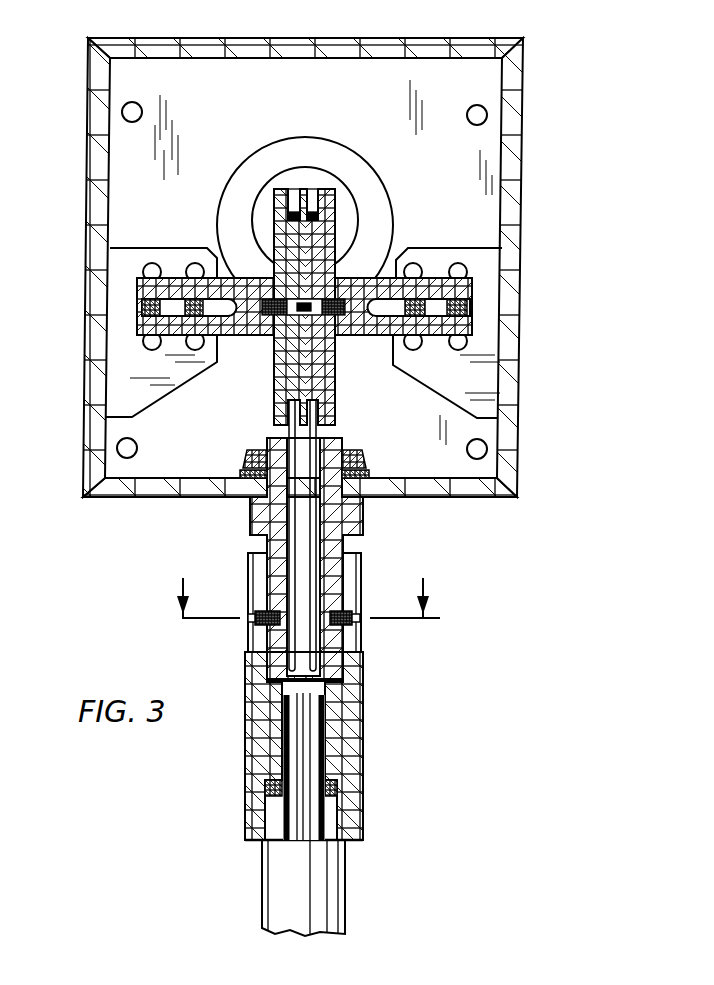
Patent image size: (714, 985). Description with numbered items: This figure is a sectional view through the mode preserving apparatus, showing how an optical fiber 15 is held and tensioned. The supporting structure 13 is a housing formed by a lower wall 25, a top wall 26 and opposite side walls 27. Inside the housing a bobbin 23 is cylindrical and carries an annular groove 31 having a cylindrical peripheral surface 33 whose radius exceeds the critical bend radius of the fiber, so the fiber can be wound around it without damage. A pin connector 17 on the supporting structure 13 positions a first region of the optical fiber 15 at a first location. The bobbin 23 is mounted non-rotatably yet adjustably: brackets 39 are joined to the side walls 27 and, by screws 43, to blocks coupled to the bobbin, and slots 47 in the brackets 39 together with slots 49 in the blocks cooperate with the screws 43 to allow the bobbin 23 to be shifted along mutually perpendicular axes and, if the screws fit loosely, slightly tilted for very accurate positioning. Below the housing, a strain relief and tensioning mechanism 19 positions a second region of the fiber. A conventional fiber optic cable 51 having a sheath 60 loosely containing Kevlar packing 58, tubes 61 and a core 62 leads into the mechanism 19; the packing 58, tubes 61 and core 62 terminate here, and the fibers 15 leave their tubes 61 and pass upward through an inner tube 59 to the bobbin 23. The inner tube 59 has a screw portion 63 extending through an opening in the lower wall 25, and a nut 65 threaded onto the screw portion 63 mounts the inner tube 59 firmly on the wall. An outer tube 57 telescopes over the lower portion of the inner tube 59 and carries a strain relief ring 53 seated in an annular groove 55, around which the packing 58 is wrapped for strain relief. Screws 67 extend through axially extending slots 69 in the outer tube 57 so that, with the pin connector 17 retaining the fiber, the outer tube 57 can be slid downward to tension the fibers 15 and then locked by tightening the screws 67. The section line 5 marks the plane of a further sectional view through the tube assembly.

The supporting structure 13 is at (326, 271).
The top wall 26 is at (445, 48).
The lower wall 25 is at (120, 488).
The side walls 27 is at (100, 132).
The pin connector 17 is at (311, 165).
The annular grooves 31 is at (294, 190).
The peripheral surface 33 is at (291, 222).
The bobbin 23 is at (274, 379).
The brackets 39 is at (117, 300).
The slots 47 is at (145, 268).
The slots 49 is at (188, 265).
The screws 43 is at (142, 307).
The optical fiber 15 is at (288, 436).
The nut 65 is at (244, 452).
The screw portion 63 is at (344, 443).
The inner tube 59 is at (363, 511).
The slots 69 is at (253, 556).
The screws 67 is at (250, 615).
The strain relief and tensioning mechanism 19 is at (301, 643).
The strain relief ring 53 is at (338, 785).
The annular groove 55 is at (276, 790).
The outer tube 57 is at (353, 827).
The packing 58 is at (323, 716).
The tubes 61 is at (313, 740).
The core 62 is at (303, 762).
The fiber optic cable 51 is at (272, 890).
The sheath 60 is at (345, 926).
The section line 5- 5 is at (308, 618).